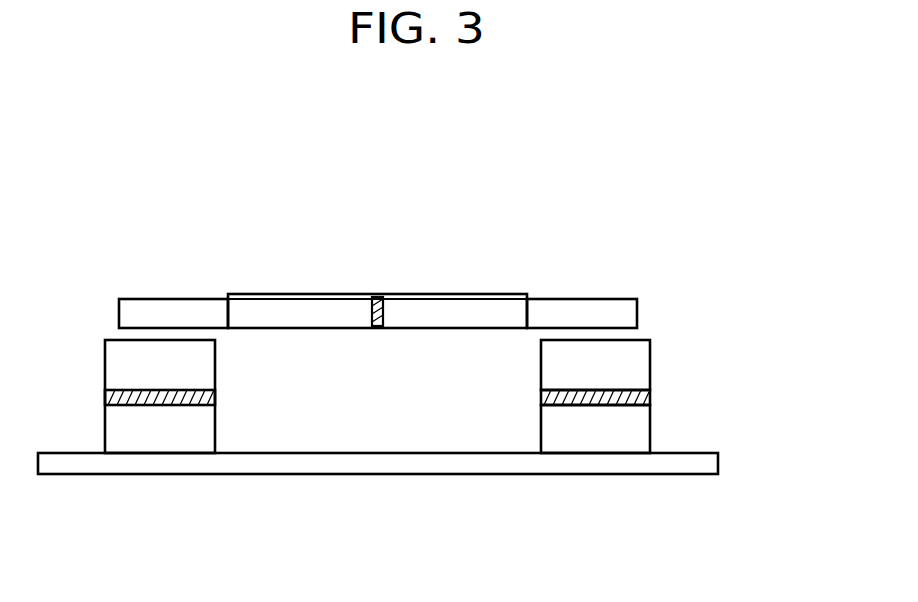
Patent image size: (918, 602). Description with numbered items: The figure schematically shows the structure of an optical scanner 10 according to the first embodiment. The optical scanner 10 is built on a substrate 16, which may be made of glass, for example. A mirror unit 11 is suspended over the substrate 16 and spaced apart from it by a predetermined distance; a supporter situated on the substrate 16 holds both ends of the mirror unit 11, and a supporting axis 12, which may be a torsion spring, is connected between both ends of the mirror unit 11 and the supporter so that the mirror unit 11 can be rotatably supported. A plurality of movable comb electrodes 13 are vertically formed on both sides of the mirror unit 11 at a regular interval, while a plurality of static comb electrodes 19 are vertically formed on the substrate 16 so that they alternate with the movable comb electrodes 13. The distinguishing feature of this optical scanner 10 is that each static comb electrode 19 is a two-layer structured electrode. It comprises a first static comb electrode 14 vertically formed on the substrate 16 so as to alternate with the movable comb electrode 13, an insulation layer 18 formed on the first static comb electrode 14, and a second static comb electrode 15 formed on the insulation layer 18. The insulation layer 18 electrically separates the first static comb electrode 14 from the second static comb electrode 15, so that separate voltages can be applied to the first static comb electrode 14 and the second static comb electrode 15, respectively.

The optical scanner 10 is at (390, 520).
The mirror unit 11 is at (495, 298).
The supporting axis 12 is at (381, 297).
The movable comb electrodes 13 is at (168, 313).
The first static comb electrode 14 is at (630, 430).
The second static comb electrode 15 is at (620, 355).
The substrate 16 is at (702, 467).
The insulation layer 18 is at (642, 400).
The static comb electrodes 19 is at (677, 396).